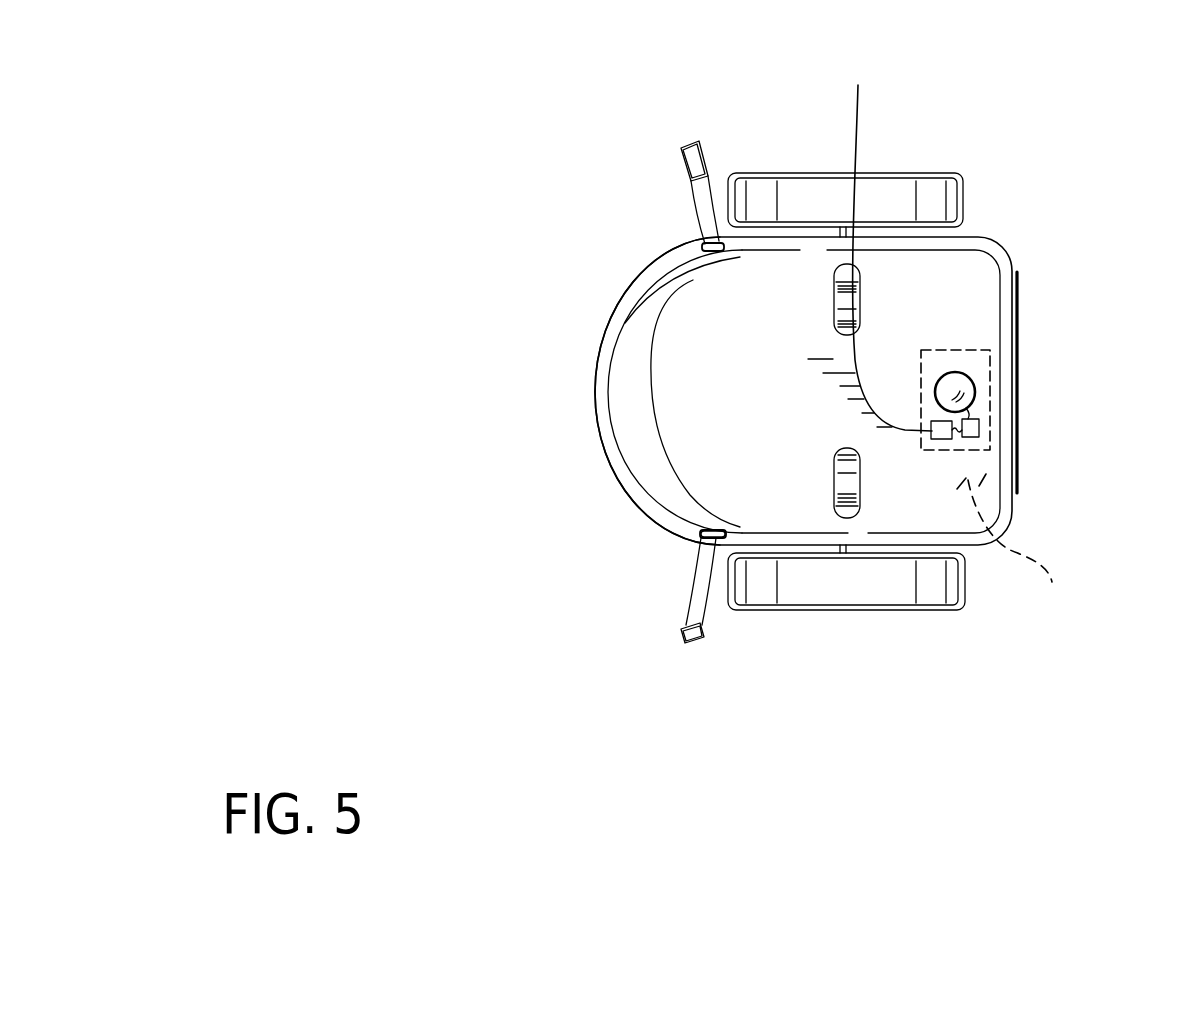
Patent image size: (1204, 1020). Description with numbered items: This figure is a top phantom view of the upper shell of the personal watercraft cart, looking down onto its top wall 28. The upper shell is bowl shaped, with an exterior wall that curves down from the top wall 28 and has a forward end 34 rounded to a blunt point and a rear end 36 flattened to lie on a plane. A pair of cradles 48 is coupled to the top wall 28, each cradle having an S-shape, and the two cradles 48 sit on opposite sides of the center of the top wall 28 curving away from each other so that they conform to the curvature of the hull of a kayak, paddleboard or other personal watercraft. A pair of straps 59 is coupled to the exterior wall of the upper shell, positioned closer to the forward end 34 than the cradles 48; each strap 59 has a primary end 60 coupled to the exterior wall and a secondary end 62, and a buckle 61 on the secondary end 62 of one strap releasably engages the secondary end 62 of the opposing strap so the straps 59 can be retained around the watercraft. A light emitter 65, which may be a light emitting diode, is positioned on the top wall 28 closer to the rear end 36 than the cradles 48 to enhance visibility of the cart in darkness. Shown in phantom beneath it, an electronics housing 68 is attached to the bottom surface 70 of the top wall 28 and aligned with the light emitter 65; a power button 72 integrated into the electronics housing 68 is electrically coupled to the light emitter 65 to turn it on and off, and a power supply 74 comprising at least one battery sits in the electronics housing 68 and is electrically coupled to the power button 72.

The top wall 28 is at (706, 323).
The forward end 34 is at (596, 373).
The rear end 36 is at (1018, 318).
The cradles 48 is at (834, 298).
The straps 59 is at (693, 170).
The primary end 60 is at (712, 530).
The buckle 61 is at (688, 642).
The secondary end 62 is at (693, 140).
The light emitter 65 is at (946, 372).
The electronics housing 68 is at (984, 450).
The bottom surface 70 is at (1016, 556).
The power button 72 is at (980, 429).
The power supply 74 is at (886, 236).